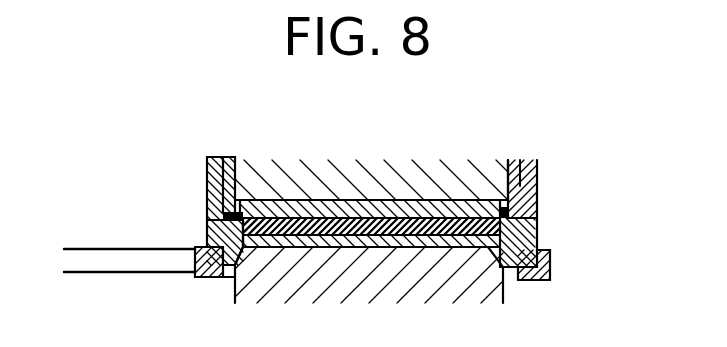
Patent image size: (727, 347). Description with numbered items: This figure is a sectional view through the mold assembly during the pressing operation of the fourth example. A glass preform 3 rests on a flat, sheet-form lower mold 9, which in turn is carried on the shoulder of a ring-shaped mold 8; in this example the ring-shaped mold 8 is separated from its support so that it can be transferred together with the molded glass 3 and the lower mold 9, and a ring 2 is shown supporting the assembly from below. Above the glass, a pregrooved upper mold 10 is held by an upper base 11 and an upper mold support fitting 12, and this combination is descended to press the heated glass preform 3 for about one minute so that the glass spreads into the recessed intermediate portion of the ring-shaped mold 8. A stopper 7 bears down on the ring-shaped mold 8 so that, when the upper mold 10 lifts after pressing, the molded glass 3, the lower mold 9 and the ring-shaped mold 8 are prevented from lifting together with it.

The ring 2 is at (548, 268).
The glass preform 3 is at (362, 246).
The stopper 7 is at (528, 200).
The ring-shaped mold 8 is at (522, 233).
The lower mold 9 is at (458, 246).
The upper mold 10 is at (299, 208).
The upper base 11 is at (458, 187).
The upper mold support fitting 12 is at (537, 173).